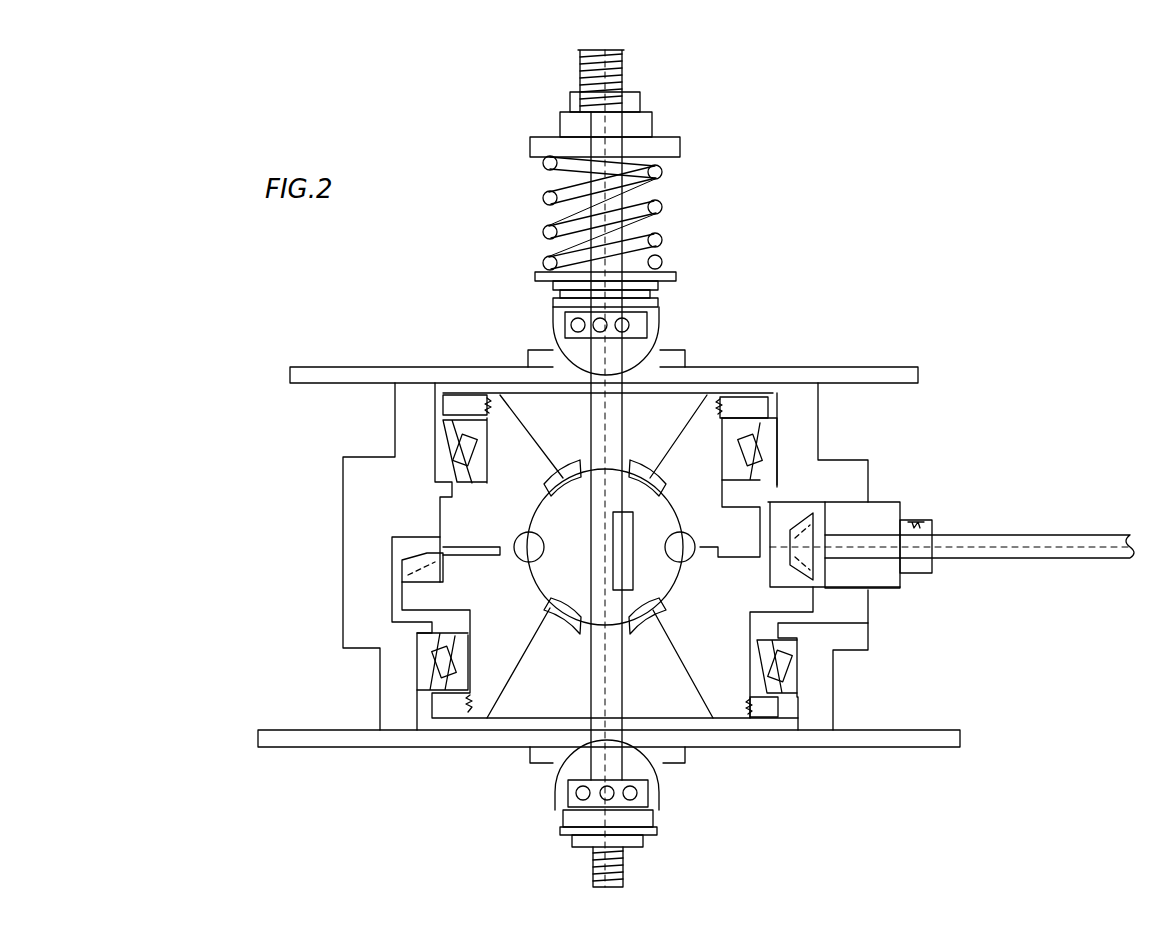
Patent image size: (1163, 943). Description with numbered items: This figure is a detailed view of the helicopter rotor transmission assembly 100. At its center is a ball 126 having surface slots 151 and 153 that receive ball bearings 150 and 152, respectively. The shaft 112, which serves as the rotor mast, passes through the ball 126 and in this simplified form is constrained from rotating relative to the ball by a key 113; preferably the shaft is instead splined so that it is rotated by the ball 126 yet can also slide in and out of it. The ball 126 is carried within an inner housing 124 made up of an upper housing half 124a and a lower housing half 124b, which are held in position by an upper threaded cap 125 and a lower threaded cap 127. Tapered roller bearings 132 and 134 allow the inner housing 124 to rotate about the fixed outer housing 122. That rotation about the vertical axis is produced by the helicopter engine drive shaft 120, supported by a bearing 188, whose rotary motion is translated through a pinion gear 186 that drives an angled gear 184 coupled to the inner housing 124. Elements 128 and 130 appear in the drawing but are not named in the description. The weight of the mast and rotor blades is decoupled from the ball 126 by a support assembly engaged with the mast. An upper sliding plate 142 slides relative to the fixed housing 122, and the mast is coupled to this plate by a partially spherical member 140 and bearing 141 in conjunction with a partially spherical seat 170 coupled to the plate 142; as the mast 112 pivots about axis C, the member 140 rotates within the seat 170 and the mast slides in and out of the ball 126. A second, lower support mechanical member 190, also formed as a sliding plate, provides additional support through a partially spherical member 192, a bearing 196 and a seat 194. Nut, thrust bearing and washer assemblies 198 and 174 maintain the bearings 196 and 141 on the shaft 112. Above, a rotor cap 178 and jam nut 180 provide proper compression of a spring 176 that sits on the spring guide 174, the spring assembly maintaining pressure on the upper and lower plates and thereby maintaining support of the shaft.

The traction drive assembly 100 is at (924, 300).
The shaft 112 is at (610, 72).
The key 113 is at (622, 540).
The helicopter engine drive shaft 120 is at (1022, 547).
The fixed outer housing 122 is at (805, 430).
The inner housing 124 is at (704, 410).
The upper housing half 124a is at (498, 440).
The lower housing half 124b is at (440, 593).
The upper threaded cap 125 is at (752, 400).
The ball 126 is at (577, 613).
The lower threaded cap 127 is at (785, 726).
The upper right support arm 128 is at (662, 433).
The lower right support arm 130 is at (665, 645).
The tapered roller bearing 132 is at (754, 458).
The tapered roller bearing 134 is at (760, 670).
The partially spherical member 140 is at (556, 320).
The bearing 141 is at (660, 328).
The upper sliding plate 142 is at (917, 375).
The ball bearing 150 is at (684, 561).
The surface slot 151 is at (665, 490).
The ball bearing 152 is at (522, 540).
The surface slot 153 is at (553, 500).
The partially spherical seat 170 is at (543, 353).
The spring guide 174 is at (680, 272).
The spring 176 is at (662, 209).
The rotor cap 178 is at (690, 147).
The jam nut 180 is at (572, 98).
The angled gear 184 is at (428, 572).
The pinion gear 186 is at (814, 549).
The bearing 188 is at (874, 526).
The lower support mechanical member 190 is at (952, 740).
The partially spherical member 192 is at (655, 773).
The seat 194 is at (528, 757).
The bearing 196 is at (568, 795).
The nut, thrust bearing and washer assembly 198 is at (640, 846).